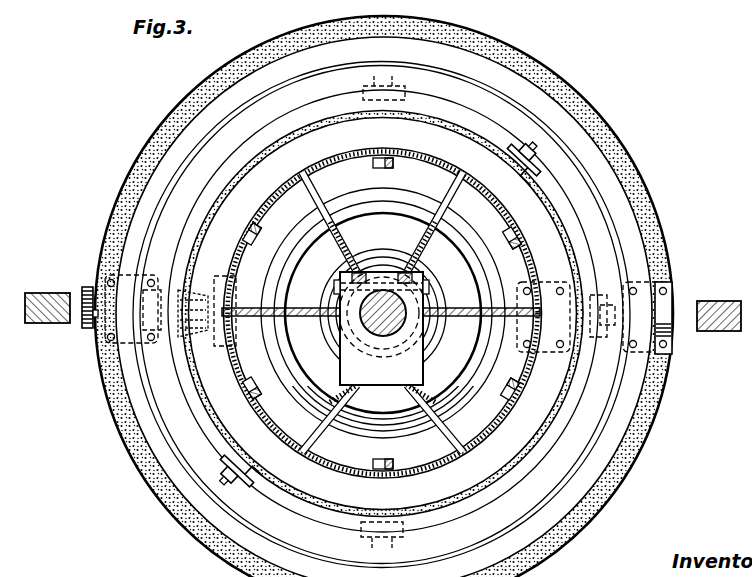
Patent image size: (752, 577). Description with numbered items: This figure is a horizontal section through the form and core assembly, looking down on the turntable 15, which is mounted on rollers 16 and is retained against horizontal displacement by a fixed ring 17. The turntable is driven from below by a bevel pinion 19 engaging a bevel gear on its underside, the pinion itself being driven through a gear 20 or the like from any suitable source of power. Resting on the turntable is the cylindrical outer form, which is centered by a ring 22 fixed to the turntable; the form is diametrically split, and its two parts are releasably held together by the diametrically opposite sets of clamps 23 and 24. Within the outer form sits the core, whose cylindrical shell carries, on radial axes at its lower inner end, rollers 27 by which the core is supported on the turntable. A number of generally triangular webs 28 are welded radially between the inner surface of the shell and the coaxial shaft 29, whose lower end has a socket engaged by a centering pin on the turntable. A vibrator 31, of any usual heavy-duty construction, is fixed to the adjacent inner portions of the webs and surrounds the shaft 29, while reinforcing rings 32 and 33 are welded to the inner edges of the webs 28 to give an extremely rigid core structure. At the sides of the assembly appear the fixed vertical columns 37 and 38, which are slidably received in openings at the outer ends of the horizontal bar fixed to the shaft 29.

The turntable 15 is at (600, 398).
The rollers 16 is at (406, 92).
The fixed ring 17 is at (583, 482).
The bevel pinion 19 is at (183, 352).
The gear 20 is at (88, 286).
The ring 22 is at (183, 394).
The clamps 23 is at (236, 472).
The clamps 24 is at (530, 158).
The rollers 27 is at (256, 228).
The webs 28 is at (423, 234).
The shaft 29 is at (368, 310).
The vibrator 31 is at (356, 372).
The reinforcing ring 32 is at (419, 273).
The reinforcing ring 33 is at (395, 197).
The vertical column 37 is at (54, 312).
The vertical column 38 is at (705, 333).